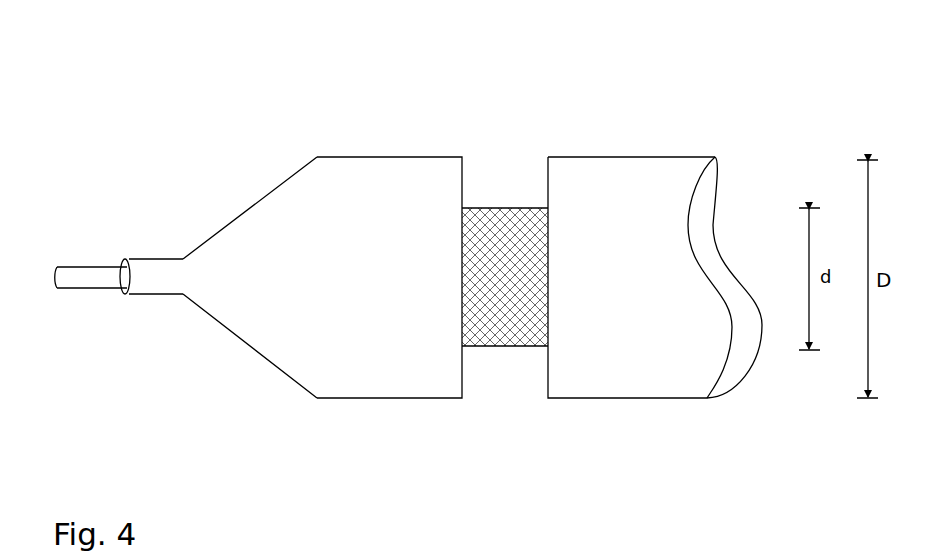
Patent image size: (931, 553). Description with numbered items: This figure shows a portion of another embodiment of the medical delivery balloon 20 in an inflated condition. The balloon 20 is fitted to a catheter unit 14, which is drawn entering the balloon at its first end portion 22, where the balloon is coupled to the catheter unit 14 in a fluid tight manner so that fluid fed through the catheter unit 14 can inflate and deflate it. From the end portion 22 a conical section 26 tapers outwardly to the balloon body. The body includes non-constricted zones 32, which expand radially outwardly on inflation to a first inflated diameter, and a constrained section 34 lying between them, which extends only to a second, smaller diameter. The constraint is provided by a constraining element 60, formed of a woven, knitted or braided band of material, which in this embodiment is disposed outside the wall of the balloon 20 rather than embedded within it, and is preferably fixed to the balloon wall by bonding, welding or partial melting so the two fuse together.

The catheter unit 14 is at (73, 292).
The delivery balloon 20 is at (432, 243).
The first end portion 22 is at (132, 297).
The conical section 26 is at (237, 337).
The non-constricted zone 32 is at (393, 128).
The constrained section 34 is at (493, 168).
The constraining element 60 is at (498, 350).